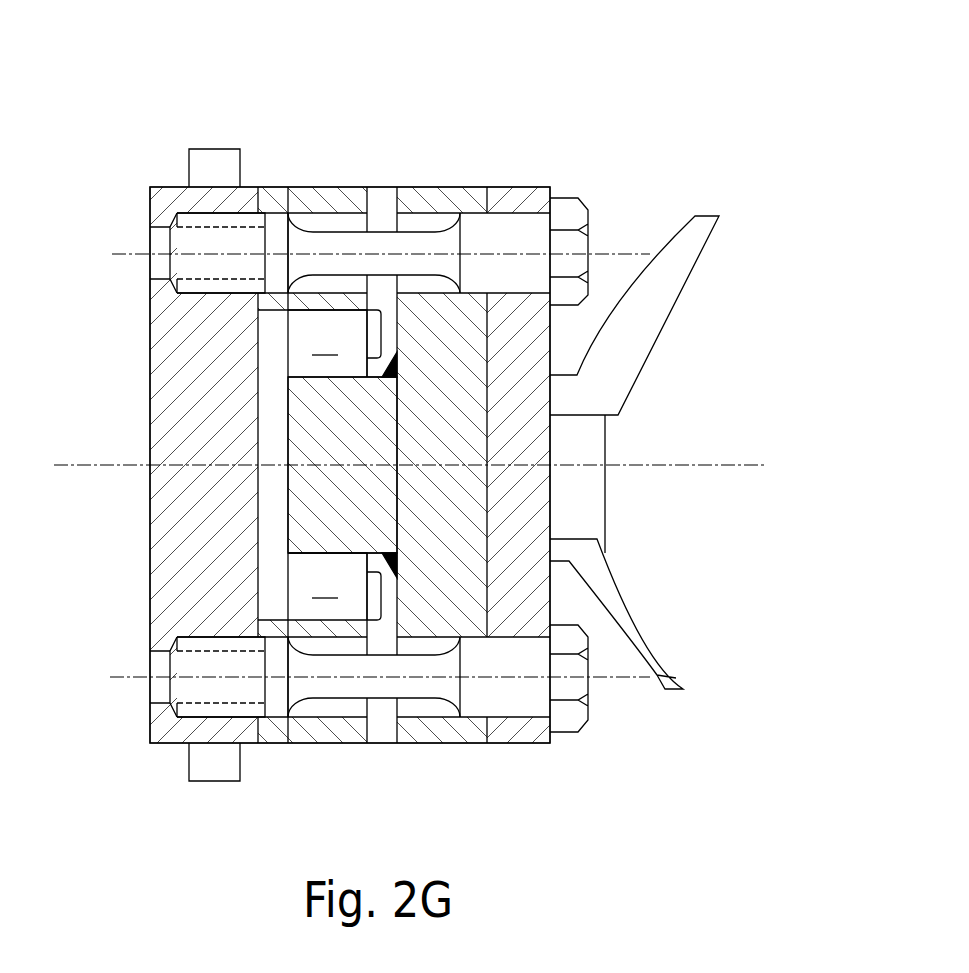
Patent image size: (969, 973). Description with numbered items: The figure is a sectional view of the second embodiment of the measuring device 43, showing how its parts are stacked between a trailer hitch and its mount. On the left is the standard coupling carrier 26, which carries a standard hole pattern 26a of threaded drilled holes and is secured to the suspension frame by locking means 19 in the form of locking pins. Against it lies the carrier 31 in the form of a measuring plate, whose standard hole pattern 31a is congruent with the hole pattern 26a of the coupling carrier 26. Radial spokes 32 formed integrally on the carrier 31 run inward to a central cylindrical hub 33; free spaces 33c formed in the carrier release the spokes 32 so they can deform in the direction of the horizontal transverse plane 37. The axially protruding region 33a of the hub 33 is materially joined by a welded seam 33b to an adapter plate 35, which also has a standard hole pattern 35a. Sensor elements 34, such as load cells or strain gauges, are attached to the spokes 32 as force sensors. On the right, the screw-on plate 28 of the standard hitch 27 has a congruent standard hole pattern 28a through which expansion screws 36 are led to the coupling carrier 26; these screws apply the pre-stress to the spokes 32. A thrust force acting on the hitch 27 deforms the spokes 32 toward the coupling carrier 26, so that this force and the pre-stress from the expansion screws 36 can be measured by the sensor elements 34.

The measuring device 43 is at (427, 105).
The locking means 19 is at (212, 149).
The standard coupling carrier 26 is at (150, 583).
The standard hole pattern 26a is at (170, 285).
The standard hitch 27 is at (680, 293).
The screw-on plate 28 is at (512, 188).
The standard hole pattern 28a is at (528, 213).
The carrier 31 is at (280, 188).
The standard hole pattern 31a is at (326, 212).
The radial spokes 32 is at (327, 465).
The central cylindrical hub 33 is at (287, 500).
The axially protruding region 33a is at (357, 446).
The welded seam 33b is at (397, 368).
The free spaces 33c is at (273, 379).
The sensor elements 34 is at (382, 332).
The adapter plate 35 is at (448, 188).
The standard hole pattern 35a is at (428, 716).
The expansion screws 36 is at (380, 253).
The horizontal transverse plane 37 is at (717, 466).